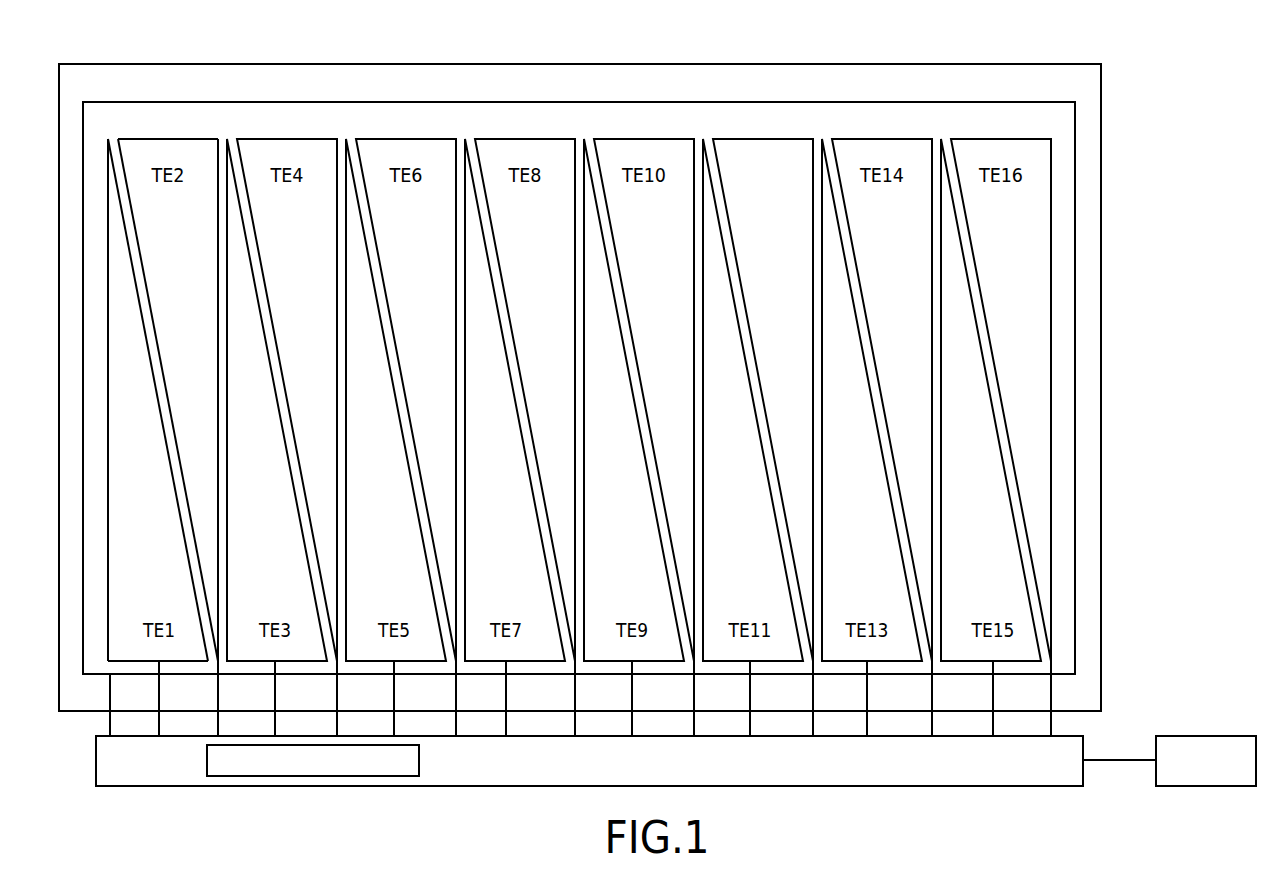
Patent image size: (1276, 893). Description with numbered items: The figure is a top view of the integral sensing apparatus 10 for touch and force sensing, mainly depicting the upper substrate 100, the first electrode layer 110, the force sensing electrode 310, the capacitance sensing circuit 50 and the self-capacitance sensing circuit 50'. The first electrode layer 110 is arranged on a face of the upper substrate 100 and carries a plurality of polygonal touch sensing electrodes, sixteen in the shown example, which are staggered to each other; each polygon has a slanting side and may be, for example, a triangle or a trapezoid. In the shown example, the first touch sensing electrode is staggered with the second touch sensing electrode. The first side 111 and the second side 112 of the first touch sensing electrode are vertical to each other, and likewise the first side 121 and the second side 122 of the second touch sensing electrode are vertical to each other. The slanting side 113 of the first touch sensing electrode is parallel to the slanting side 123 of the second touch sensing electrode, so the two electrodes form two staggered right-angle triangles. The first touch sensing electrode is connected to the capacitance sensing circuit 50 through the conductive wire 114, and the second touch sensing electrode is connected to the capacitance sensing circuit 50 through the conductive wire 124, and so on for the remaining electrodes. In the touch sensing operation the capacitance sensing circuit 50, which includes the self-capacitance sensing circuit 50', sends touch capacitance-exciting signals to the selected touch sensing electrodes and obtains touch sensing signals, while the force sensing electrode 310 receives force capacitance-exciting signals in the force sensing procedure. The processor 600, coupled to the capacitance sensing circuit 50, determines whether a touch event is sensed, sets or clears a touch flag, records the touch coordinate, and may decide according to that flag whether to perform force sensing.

The integral sensing apparatus 10 is at (401, 40).
The upper substrate 100 is at (729, 72).
The force sensing electrode 310 is at (580, 108).
The first electrode layer 110 is at (764, 146).
The first side of touch sensing electrode TE1 111 is at (110, 402).
The second side of touch sensing electrode TE1 112 is at (137, 658).
The slanting side of touch sensing electrode TE1 113 is at (172, 468).
The conductive wire 114 is at (160, 684).
The first side of touch sensing electrode TE2 121 is at (217, 400).
The second side of touch sensing electrode TE2 122 is at (170, 139).
The slanting side of touch sensing electrode TE2 123 is at (158, 346).
The conductive wire 124 is at (220, 684).
The capacitance sensing circuit 50 is at (589, 778).
The self-capacitance sensing circuit 50' is at (358, 760).
The processor 600 is at (1206, 745).